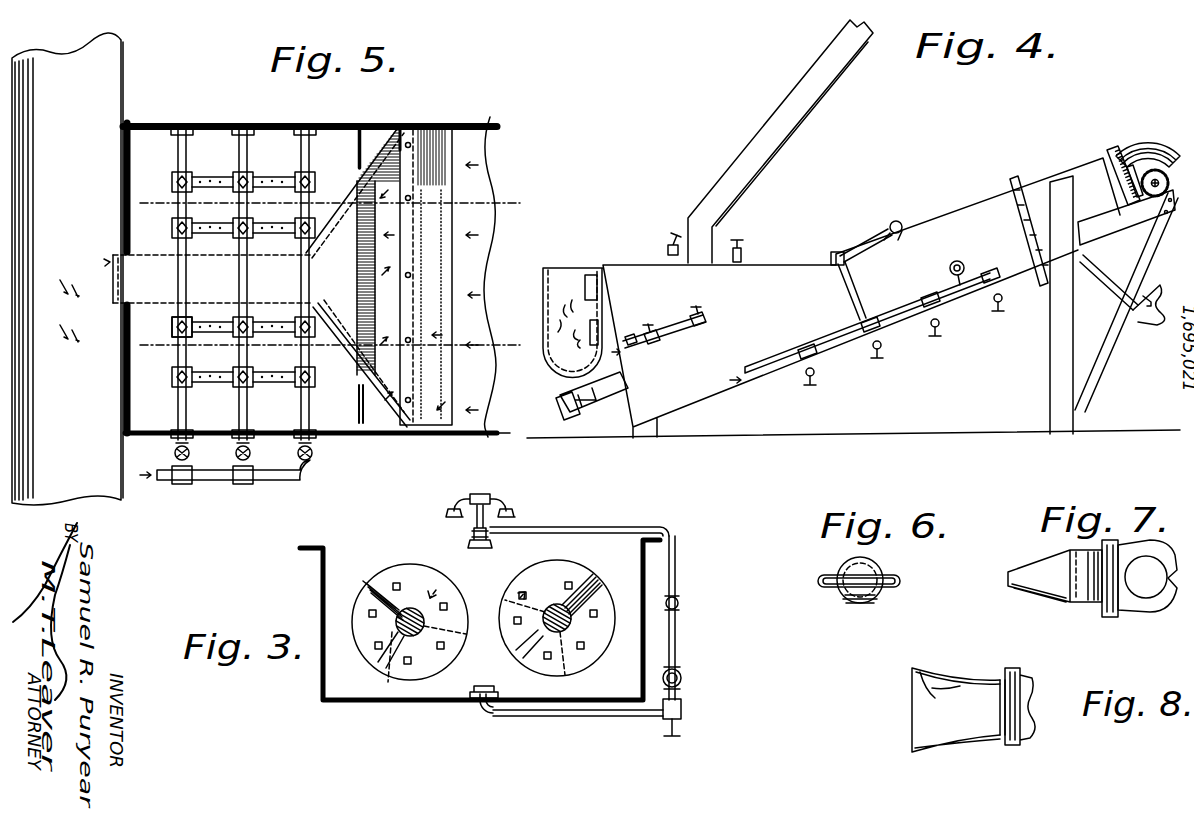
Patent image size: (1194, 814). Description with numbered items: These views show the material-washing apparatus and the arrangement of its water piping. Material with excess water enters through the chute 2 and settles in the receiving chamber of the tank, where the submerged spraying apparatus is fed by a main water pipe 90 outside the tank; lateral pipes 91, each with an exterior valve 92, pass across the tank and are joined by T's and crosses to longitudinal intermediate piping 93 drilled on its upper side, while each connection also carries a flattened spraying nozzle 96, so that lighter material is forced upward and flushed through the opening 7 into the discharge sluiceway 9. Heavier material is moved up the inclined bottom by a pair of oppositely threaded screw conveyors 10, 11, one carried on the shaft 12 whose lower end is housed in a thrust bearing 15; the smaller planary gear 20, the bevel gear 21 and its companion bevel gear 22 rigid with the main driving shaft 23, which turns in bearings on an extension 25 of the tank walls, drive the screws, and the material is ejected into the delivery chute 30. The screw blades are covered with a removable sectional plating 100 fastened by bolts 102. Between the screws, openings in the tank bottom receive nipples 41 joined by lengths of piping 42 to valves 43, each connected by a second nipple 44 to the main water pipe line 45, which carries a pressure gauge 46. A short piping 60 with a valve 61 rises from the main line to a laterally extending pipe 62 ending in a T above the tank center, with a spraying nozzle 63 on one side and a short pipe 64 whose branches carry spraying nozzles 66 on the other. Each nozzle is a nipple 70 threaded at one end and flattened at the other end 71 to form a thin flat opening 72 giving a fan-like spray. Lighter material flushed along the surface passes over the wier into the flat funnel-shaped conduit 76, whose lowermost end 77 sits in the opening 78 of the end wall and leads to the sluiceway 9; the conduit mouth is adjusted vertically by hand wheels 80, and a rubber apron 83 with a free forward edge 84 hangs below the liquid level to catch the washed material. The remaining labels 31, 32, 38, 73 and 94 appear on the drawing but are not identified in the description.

In FIG. 4, the chute 2 is at (700, 200).
In FIG. 4, the opening 7 is at (585, 288).
In FIG. 5, the discharge trough or sluiceway 9 is at (110, 57).
In FIG. 4, the discharge trough or sluiceway 9 is at (548, 275).
In FIG. 3, the screw conveyor 10 is at (583, 580).
In FIG. 3, the screw conveyor 11 is at (405, 572).
In FIG. 3, the shaft 12 is at (553, 605).
In FIG. 4, the thrust bearing 15 is at (560, 395).
In FIG. 4, the planary gear 20 is at (1106, 152).
In FIG. 4, the bevel gear 21 is at (1128, 168).
In FIG. 4, the bevel gear 22 is at (1150, 170).
In FIG. 4, the main driving shaft 23 is at (1165, 140).
In FIG. 4, the extension 25 is at (1142, 230).
In FIG. 4, the delivery chute 30 is at (1152, 322).
In FIG. 4, the post 31 is at (1076, 390).
In FIG. 4, the brace 32 is at (1112, 325).
In FIG. 4, the valve 38 is at (668, 255).
In FIG. 3, the nipple 41 is at (478, 714).
In FIG. 3, the piping 42 is at (578, 717).
In FIG. 4, the valve 43 is at (1003, 299).
In FIG. 3, the valve 43 is at (685, 715).
In FIG. 4, the second nipple 44 is at (805, 362).
In FIG. 3, the second nipple 44 is at (682, 705).
In FIG. 4, the main water pipe line 45 is at (756, 355).
In FIG. 3, the main water pipe line 45 is at (682, 676).
In FIG. 4, the pressure gauge 46 is at (975, 256).
In FIG. 4, the piping 60 is at (858, 282).
In FIG. 4, the valve 61 is at (878, 293).
In FIG. 3, the valve 61 is at (685, 603).
In FIG. 3, the laterally extending pipe 62 is at (626, 528).
In FIG. 4, the spraying nozzle 63 is at (835, 256).
In FIG. 3, the spraying nozzle 63 is at (492, 542).
In FIG. 4, the pipe 64 is at (876, 232).
In FIG. 4, the spraying nozzle 66 is at (902, 233).
In FIG. 3, the spraying nozzle 66 is at (452, 518).
In FIG. 7, the nipple 70 is at (1080, 548).
In FIG. 8, the nipple 70 is at (990, 685).
In FIG. 7, the flattened end 71 is at (1016, 572).
In FIG. 8, the flattened end 71 is at (925, 675).
In FIG. 6, the thin flat opening 72 is at (880, 575).
In FIG. 3, the hub 73 is at (424, 617).
In FIG. 5, the flat funnel shaped conduit 76 is at (212, 279).
In FIG. 5, the lowermost end 77 is at (108, 262).
In FIG. 5, the opening 78 is at (110, 262).
In FIG. 4, the hand wheels 80 is at (745, 255).
In FIG. 5, the flexible apron 83 is at (453, 140).
In FIG. 5, the free forward edge 84 is at (452, 185).
In FIG. 5, the main water pipe 90 is at (222, 481).
In FIG. 4, the main water pipe 90 is at (688, 328).
In FIG. 5, the lateral pipes 91 is at (305, 412).
In FIG. 5, the valve 92 is at (252, 455).
In FIG. 4, the valve 92 is at (700, 316).
In FIG. 5, the intermediate piping 93 is at (243, 279).
In FIG. 5, the perforated pipe 94 is at (274, 380).
In FIG. 5, the spraying nozzle 96 is at (178, 336).
In FIG. 3, the plating 100 is at (603, 586).
In FIG. 3, the bolts 102 is at (585, 650).